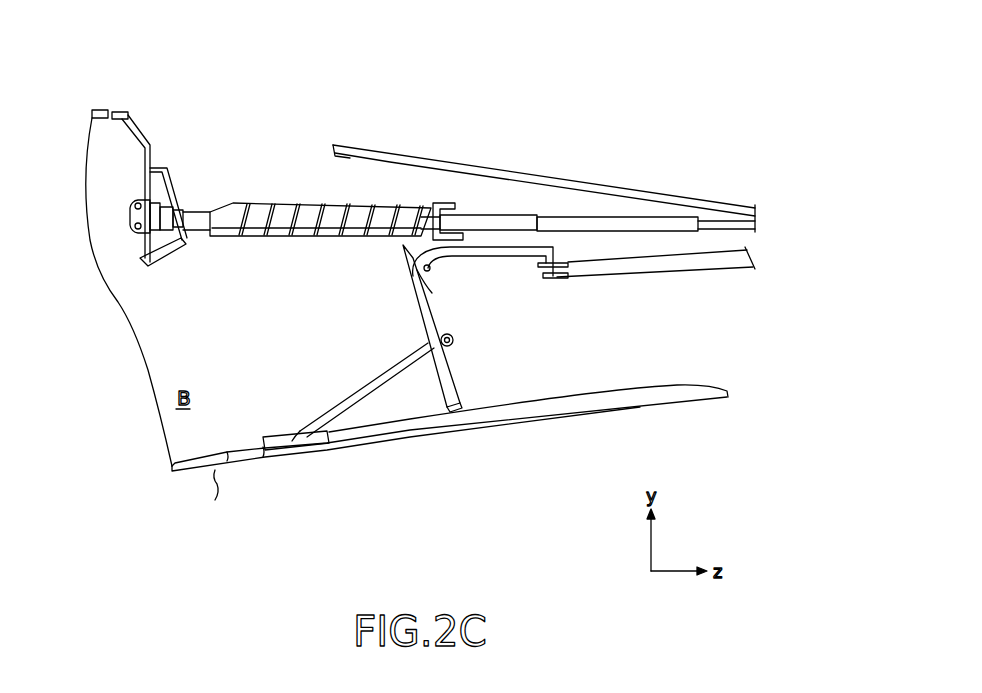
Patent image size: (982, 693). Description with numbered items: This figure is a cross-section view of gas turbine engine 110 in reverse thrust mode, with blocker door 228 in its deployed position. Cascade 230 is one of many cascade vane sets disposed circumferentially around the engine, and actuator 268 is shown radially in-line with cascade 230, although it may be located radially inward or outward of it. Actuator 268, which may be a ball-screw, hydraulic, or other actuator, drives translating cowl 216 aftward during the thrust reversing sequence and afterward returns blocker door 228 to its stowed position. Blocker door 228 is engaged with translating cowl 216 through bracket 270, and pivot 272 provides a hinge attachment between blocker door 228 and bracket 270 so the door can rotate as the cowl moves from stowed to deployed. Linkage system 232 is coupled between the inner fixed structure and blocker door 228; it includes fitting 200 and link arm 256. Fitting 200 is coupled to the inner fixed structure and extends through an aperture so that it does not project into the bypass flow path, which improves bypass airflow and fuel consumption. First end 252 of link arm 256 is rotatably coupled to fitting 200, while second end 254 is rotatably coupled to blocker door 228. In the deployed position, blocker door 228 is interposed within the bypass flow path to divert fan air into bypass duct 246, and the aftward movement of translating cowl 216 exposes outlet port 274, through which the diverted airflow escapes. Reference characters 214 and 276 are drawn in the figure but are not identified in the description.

The gas turbine engine 110 is at (521, 132).
The fitting arrangement 200 is at (306, 472).
The mounting tab 214 is at (97, 108).
The translating cowl 216 is at (450, 168).
The blocker door 228 is at (418, 302).
The cascade 230 is at (301, 181).
The linkage system 232 is at (278, 382).
The bypass duct 246 is at (243, 170).
The first end of link arm 252 is at (270, 412).
The second end of link arm 254 is at (471, 345).
The link arm 256 is at (378, 376).
The actuator 268 is at (127, 190).
The bracket 270 is at (553, 278).
The pivot 272 is at (434, 271).
The outlet port 274 is at (264, 130).
The foot 276 is at (465, 405).